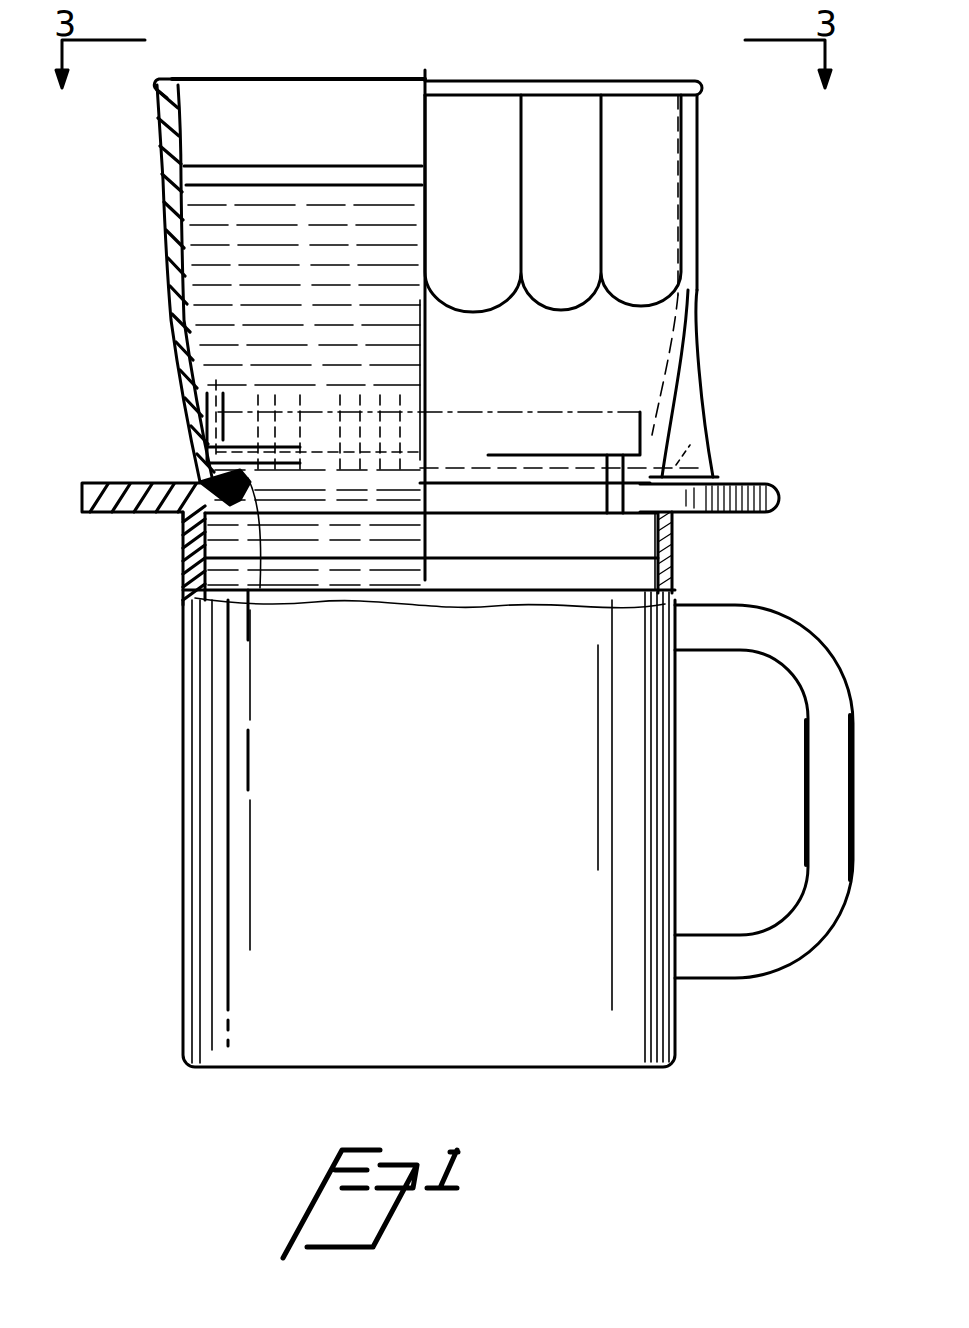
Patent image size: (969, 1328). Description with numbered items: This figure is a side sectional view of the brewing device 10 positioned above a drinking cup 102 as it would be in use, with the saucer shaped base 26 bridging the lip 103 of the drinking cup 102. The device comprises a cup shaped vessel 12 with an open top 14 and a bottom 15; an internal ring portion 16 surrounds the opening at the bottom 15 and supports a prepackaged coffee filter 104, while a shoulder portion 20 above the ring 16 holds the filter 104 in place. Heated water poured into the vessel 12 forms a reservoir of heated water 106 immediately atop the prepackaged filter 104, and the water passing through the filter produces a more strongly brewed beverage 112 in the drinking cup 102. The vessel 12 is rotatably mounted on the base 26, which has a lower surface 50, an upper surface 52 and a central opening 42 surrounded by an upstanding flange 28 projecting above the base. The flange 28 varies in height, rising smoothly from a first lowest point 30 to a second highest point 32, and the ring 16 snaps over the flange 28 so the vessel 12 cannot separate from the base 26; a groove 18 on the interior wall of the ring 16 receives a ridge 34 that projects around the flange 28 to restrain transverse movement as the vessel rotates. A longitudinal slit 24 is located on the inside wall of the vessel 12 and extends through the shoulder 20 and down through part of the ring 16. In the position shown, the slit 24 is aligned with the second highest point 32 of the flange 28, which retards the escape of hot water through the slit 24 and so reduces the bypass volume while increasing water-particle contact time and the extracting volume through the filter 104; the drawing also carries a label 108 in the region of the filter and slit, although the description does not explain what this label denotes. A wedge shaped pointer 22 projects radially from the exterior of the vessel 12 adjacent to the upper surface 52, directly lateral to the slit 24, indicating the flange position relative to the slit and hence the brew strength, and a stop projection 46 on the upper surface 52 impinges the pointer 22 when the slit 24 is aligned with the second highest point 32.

The brewing device 10 is at (713, 170).
The cup shaped vessel 12 is at (697, 214).
The open top 14 is at (414, 78).
The bottom 15 is at (362, 452).
The internal ring portion 16 is at (680, 515).
The groove 18 is at (660, 520).
The shoulder portion 20 is at (660, 462).
The wedge shaped pointer 22 is at (718, 470).
The longitudinal slit 24 is at (212, 396).
The base 26 is at (205, 538).
The upstanding flange 28 is at (612, 470).
The first lowest point 30 is at (600, 460).
The second highest point 32 is at (266, 578).
The ridge 34 is at (610, 492).
The central opening 42 is at (410, 562).
The stop projection 46 is at (690, 447).
The lower surface 50 is at (106, 514).
The upper surface 52 is at (106, 482).
The drinking cup 102 is at (182, 826).
The lip 103 is at (672, 84).
The prepackaged coffee filter 104 is at (515, 422).
The reservoir of heated water 106 is at (255, 262).
The filter 108 is at (302, 392).
The brewed beverage 112 is at (235, 586).